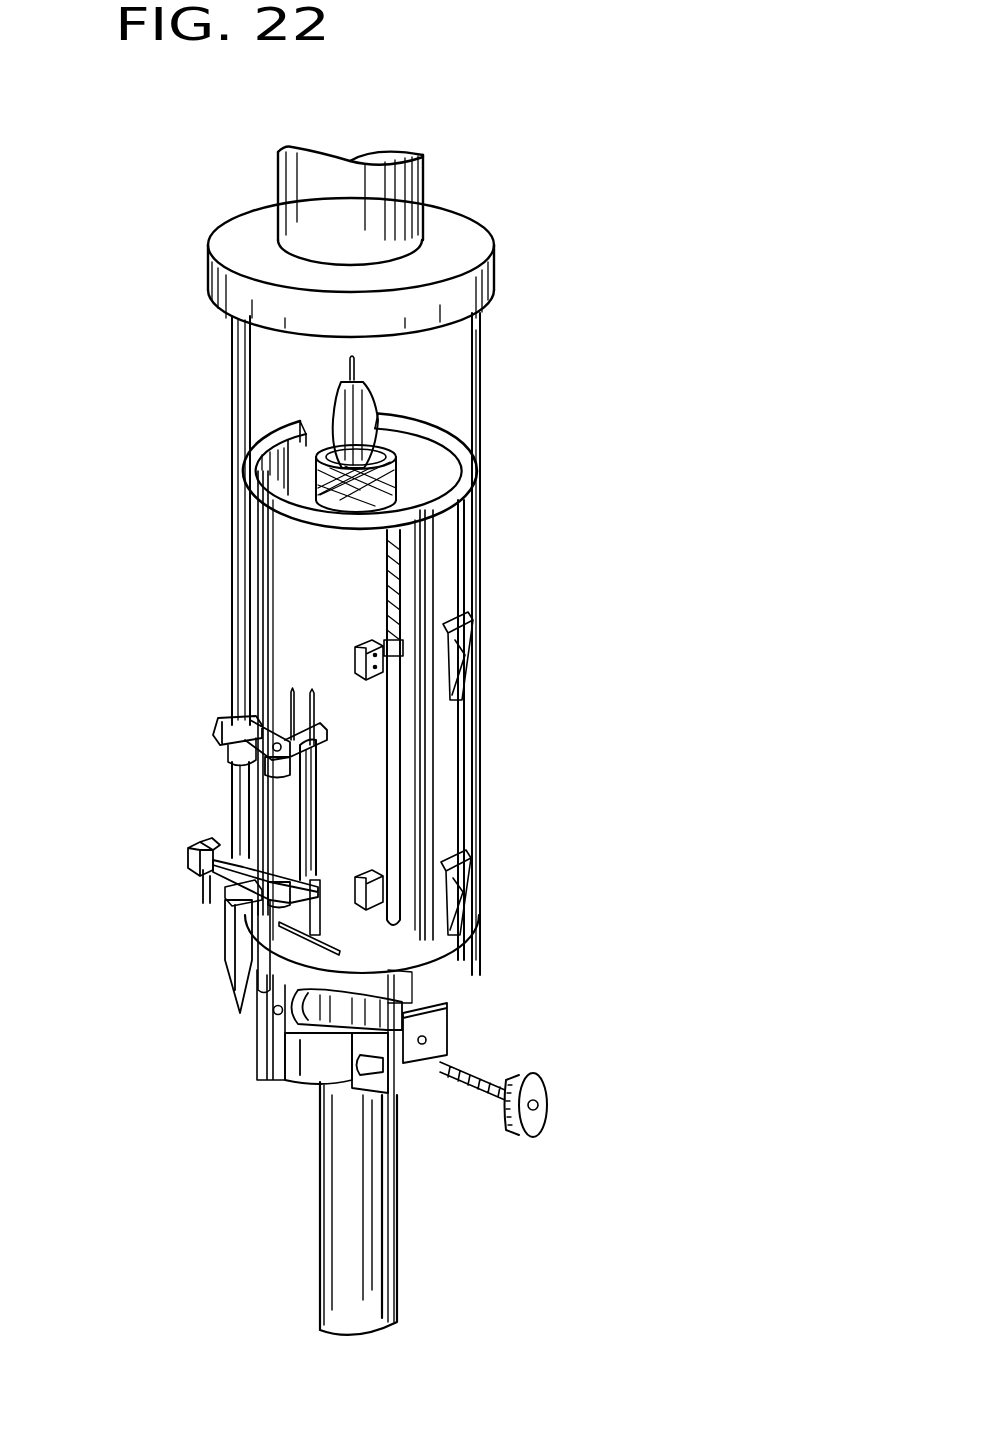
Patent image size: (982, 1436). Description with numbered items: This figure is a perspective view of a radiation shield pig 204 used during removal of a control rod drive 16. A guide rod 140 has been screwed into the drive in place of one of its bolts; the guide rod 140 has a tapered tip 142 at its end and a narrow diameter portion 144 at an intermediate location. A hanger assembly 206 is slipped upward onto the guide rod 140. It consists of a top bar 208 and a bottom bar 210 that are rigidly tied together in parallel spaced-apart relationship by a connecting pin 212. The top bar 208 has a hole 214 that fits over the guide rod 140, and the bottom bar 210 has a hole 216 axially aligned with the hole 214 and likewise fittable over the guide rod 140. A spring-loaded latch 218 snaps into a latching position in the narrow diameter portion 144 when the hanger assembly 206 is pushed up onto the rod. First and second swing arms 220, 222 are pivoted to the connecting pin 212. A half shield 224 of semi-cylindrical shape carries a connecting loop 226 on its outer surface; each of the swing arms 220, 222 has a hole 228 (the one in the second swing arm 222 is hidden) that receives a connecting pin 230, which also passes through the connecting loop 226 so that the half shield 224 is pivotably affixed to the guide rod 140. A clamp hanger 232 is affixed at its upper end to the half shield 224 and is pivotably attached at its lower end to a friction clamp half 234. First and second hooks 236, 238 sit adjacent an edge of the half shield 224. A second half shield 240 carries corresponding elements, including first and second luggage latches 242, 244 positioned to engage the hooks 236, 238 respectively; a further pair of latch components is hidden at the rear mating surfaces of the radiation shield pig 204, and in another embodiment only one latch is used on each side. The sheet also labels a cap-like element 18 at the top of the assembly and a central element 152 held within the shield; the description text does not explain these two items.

The control rod drive 16 is at (383, 1268).
The top cap disc 18 is at (495, 265).
The guide rod 140 is at (235, 381).
The tapered tip 142 is at (262, 978).
The narrow diameter portion 144 is at (235, 905).
The bulb holder 152 is at (395, 482).
The radiation shield pig 204 is at (592, 697).
The hanger assembly 206 is at (305, 662).
The top bar 208 is at (226, 750).
The bottom bar 210 is at (248, 903).
The connecting pin 212 is at (250, 805).
The hole 214 is at (225, 730).
The hole 216 is at (213, 860).
The spring-loaded latch 218 is at (205, 893).
The first swing arm 220 is at (280, 699).
The second swing arm 222 is at (301, 949).
The half shield 224 is at (268, 535).
The connecting loop 226 is at (316, 800).
The hole 228 is at (313, 745).
The connecting pin 230 is at (320, 900).
The clamp hanger 232 is at (277, 1035).
The friction clamp half 234 is at (305, 1088).
The first hook 236 is at (370, 643).
The second hook 238 is at (365, 876).
The second half shield 240 is at (467, 528).
The first luggage latch 242 is at (465, 660).
The second luggage latch 244 is at (468, 903).